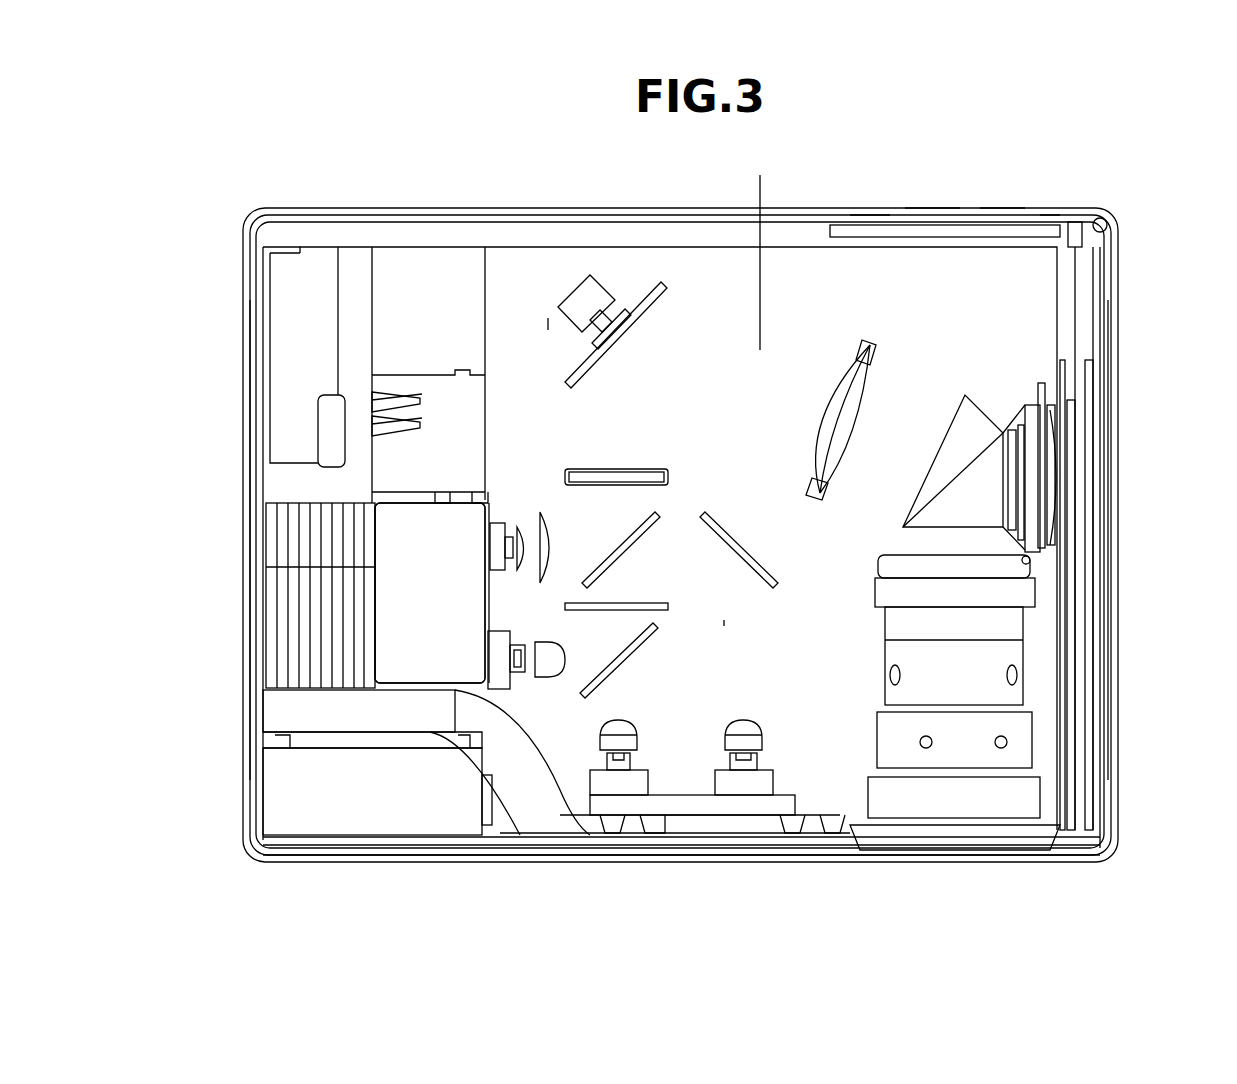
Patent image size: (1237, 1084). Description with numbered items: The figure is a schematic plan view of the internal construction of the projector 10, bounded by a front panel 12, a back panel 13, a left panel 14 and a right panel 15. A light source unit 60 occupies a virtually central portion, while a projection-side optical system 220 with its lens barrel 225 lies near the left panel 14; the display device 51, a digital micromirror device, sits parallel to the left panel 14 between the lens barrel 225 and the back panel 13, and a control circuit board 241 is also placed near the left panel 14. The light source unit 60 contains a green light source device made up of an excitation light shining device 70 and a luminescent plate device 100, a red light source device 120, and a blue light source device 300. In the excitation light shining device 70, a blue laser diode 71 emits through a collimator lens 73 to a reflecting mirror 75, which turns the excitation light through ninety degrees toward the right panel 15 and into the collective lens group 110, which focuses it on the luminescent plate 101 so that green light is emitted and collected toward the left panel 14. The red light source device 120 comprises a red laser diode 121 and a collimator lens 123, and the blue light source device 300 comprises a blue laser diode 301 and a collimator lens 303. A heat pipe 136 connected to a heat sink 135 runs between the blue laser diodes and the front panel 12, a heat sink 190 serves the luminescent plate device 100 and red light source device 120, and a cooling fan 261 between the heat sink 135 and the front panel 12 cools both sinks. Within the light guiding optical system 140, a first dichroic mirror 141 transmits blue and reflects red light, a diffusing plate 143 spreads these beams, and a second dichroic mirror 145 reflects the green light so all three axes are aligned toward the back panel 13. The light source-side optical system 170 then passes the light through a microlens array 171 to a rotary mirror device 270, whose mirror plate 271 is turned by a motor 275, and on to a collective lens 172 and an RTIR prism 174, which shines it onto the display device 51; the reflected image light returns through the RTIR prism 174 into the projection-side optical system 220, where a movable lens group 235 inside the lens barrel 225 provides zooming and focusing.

The projector 10 is at (1170, 197).
The front panel 12 is at (362, 862).
The back panel 13 is at (292, 212).
The left panel 14 is at (1118, 278).
The right panel 15 is at (247, 272).
The display device 51 is at (1025, 468).
The light source unit 60 is at (548, 325).
The excitation light shining device 70 is at (772, 726).
The blue laser diode 71 is at (748, 765).
The collimator lens 73 is at (760, 742).
The reflecting mirror 75 is at (782, 582).
The luminescent plate device 100 is at (516, 498).
The luminescent plate 101 is at (503, 547).
The collective lens group 110 is at (516, 582).
The red light source device 120 is at (510, 700).
The red laser diode 121 is at (522, 672).
The collimator lens 123 is at (545, 665).
The heat sink 135 is at (297, 718).
The heat pipe 136 is at (615, 827).
The light guiding optical system 140 is at (724, 623).
The first dichroic mirror 141 is at (652, 628).
The diffusing plate 143 is at (650, 607).
The second dichroic mirror 145 is at (620, 548).
The light source-side optical system 170 is at (760, 350).
The microlens array 171 is at (645, 478).
The collective lens 172 is at (858, 340).
The RTIR prism 174 is at (968, 392).
The heat sink 190 is at (385, 532).
The projection-side optical system 220 is at (1042, 655).
The lens barrel 225 is at (1003, 808).
The movable lens group 235 is at (1015, 613).
The control circuit board 241 is at (1082, 387).
The cooling fan 261 is at (318, 815).
The rotary mirror device 270 is at (622, 283).
The mirror plate 271 is at (662, 286).
The motor 275 is at (580, 293).
The blue light source device 300 is at (648, 726).
The blue laser diode 301 is at (625, 765).
The collimator lens 303 is at (632, 742).